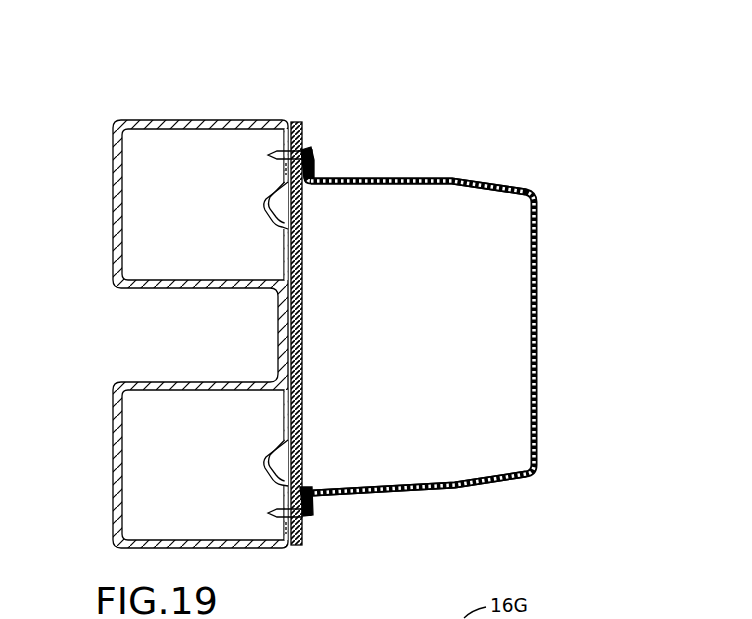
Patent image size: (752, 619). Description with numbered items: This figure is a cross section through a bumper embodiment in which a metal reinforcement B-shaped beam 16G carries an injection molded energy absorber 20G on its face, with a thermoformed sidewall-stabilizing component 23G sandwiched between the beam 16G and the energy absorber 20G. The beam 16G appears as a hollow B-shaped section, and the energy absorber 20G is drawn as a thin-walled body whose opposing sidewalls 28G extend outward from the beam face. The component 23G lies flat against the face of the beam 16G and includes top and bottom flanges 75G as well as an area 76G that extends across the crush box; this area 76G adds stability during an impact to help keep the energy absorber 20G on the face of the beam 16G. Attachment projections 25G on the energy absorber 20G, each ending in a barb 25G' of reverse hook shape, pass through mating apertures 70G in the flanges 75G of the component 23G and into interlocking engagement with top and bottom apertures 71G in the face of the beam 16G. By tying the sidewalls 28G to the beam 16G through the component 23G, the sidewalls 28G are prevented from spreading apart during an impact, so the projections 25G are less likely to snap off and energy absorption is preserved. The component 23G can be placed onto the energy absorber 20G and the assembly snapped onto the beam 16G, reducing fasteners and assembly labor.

The metal reinforcement B-shaped beam 16G is at (158, 123).
The energy absorber 20G is at (495, 190).
The sidewall-stabilizing component 23G is at (304, 378).
The attachment projections 25G is at (347, 320).
The barbs 25G' is at (240, 332).
The sidewalls 28G is at (363, 177).
The apertures 70G is at (306, 542).
The apertures 71G is at (287, 169).
The flanges 75G is at (306, 146).
The area 76G is at (303, 274).